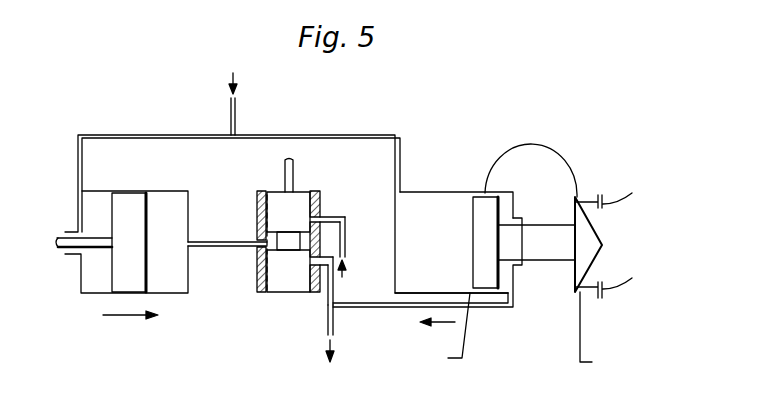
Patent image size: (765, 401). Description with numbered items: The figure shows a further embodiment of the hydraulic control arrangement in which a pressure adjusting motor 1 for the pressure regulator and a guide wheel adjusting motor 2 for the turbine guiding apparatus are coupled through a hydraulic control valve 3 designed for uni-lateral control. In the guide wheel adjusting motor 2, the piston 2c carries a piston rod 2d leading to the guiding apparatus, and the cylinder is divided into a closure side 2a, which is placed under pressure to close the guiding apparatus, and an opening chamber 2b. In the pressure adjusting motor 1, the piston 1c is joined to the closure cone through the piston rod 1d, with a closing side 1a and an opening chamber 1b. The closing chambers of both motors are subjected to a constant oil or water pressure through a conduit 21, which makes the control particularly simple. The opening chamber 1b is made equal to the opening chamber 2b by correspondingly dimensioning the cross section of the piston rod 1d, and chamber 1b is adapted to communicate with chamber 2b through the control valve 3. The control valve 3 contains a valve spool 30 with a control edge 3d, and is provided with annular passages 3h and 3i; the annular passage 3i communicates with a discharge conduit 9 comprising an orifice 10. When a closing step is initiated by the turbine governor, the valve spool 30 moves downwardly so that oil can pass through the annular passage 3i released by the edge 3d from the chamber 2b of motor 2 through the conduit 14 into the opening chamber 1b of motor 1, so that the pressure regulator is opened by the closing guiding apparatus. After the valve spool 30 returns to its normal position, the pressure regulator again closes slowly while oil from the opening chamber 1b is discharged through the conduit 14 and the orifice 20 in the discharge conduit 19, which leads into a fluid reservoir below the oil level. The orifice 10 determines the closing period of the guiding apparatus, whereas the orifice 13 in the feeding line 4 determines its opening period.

The pressure adjusting motor 1 is at (451, 193).
The closing side of pressure adjusting motor 1a is at (416, 208).
The opening chamber of pressure adjusting motor 1b is at (503, 282).
The piston of pressure adjusting motor 1c is at (480, 208).
The piston rod of pressure adjusting motor 1d is at (547, 229).
The guide wheel adjusting motor 2 is at (80, 293).
The closure side of guide wheel adjusting motor 2a is at (94, 215).
The opening chamber of guide wheel adjusting motor 2b is at (173, 208).
The piston of guide wheel adjusting motor 2c is at (128, 206).
The piston rod of guide wheel adjusting motor 2d is at (66, 246).
The hydraulic control valve 3 is at (274, 240).
The control edge 3d is at (276, 252).
The annular passage 3h is at (257, 218).
The annular passage 3i is at (257, 257).
The valve spool 30 is at (276, 202).
The feeding line 4 is at (345, 240).
The discharge conduit 9 is at (326, 292).
The orifice 10 is at (334, 283).
The orifice 13 is at (331, 221).
The conduit 14 is at (383, 306).
The discharge conduit 19 is at (328, 316).
The orifice 20 is at (334, 326).
The conduit 21 is at (236, 116).